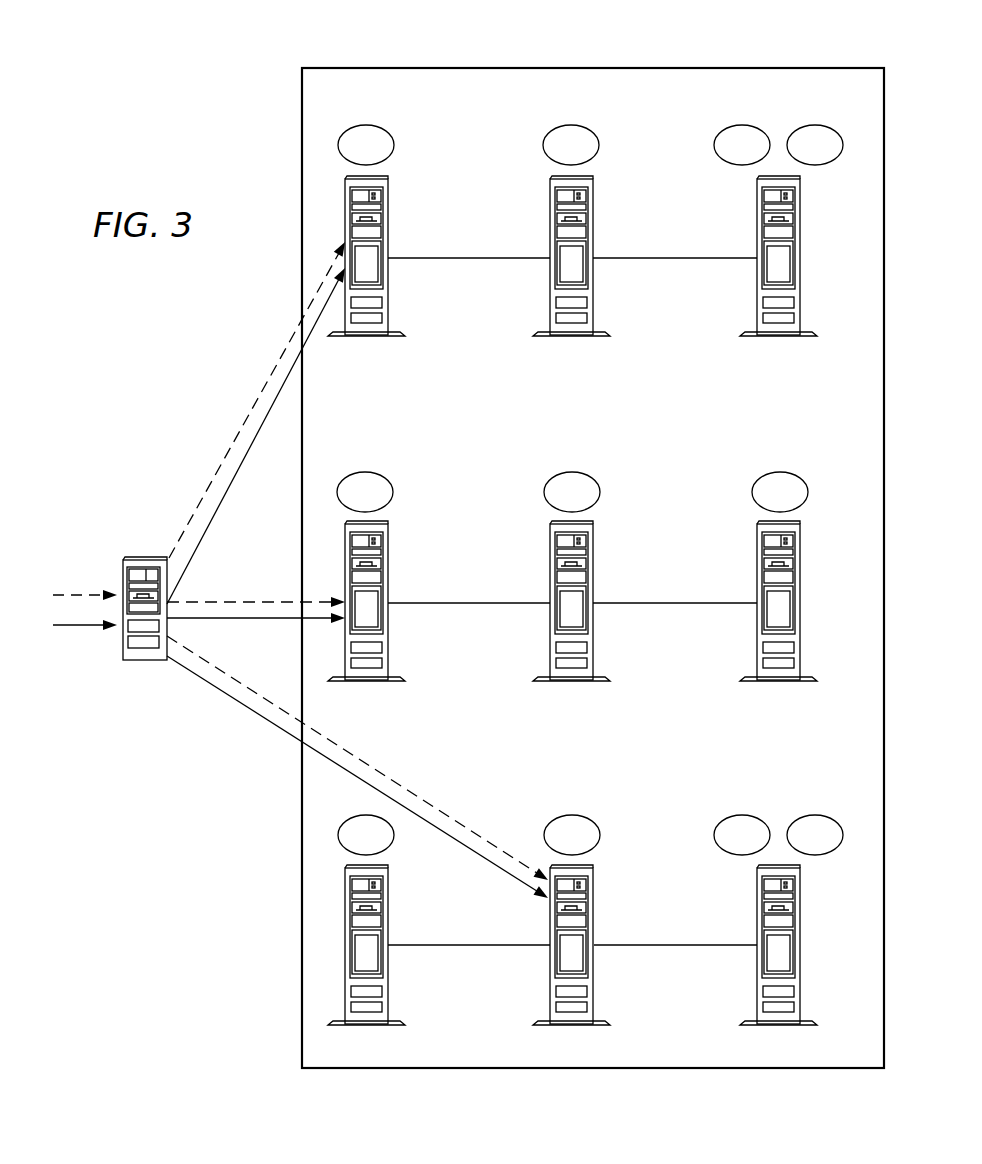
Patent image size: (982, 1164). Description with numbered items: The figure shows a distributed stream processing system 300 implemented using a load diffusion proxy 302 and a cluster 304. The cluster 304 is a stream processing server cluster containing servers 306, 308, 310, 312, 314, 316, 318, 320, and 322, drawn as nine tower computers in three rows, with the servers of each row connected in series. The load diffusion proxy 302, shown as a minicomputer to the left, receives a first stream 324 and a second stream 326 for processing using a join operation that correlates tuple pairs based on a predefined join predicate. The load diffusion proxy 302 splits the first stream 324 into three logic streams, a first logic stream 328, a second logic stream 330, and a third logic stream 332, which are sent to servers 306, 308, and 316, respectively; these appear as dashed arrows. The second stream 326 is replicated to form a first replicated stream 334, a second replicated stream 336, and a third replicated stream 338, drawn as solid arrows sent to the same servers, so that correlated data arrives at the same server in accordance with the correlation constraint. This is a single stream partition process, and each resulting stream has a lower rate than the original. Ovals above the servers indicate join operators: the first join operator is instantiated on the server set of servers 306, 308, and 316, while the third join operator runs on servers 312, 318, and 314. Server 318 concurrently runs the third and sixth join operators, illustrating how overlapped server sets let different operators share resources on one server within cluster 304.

The distributed stream processing system 300 is at (176, 308).
The load diffusion proxy 302 is at (145, 661).
The cluster 304 is at (648, 60).
The server 306 is at (388, 225).
The server 308 is at (388, 572).
The server 310 is at (388, 960).
The server 312 is at (593, 225).
The server 314 is at (593, 572).
The server 316 is at (594, 960).
The server 318 is at (800, 225).
The server 320 is at (800, 572).
The server 322 is at (800, 962).
The stream S1 324 is at (82, 593).
The stream S2 326 is at (82, 628).
The stream S1,1 328 is at (232, 445).
The stream S1,2 330 is at (248, 600).
The stream S1,3 332 is at (486, 843).
The stream S2,1 334 is at (223, 498).
The stream S2,2 336 is at (254, 620).
The stream S2,3 338 is at (478, 866).